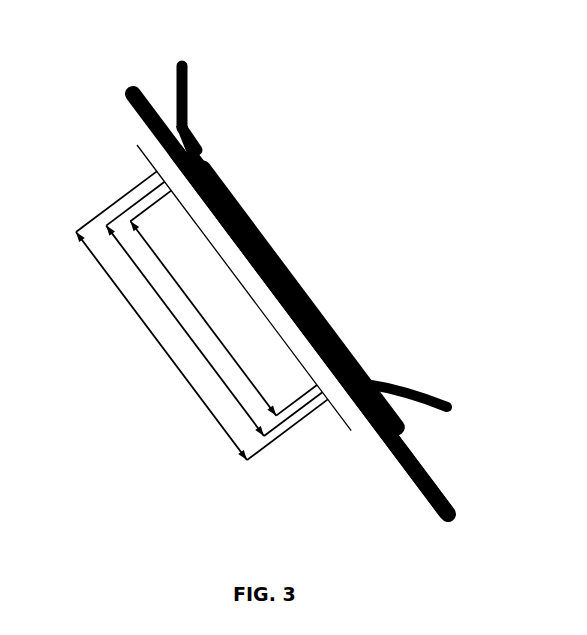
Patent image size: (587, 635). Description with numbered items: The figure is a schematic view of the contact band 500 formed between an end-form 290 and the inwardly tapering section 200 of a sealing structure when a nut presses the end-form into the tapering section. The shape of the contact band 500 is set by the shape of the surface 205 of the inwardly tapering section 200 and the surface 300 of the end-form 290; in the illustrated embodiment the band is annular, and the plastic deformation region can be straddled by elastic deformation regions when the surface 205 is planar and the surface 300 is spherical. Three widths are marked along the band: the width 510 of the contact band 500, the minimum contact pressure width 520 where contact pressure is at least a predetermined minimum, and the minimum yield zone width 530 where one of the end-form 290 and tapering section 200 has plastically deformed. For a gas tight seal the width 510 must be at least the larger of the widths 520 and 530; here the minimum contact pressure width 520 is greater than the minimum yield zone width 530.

The inwardly tapering section 200 is at (392, 450).
The surface 205 is at (402, 431).
The end-form 290 is at (392, 378).
The surface 300 is at (175, 78).
The contact band 500 is at (274, 247).
The width of contact band 510 is at (103, 270).
The minimum contact pressure width 520 is at (173, 319).
The minimum yield zone width 530 is at (230, 353).